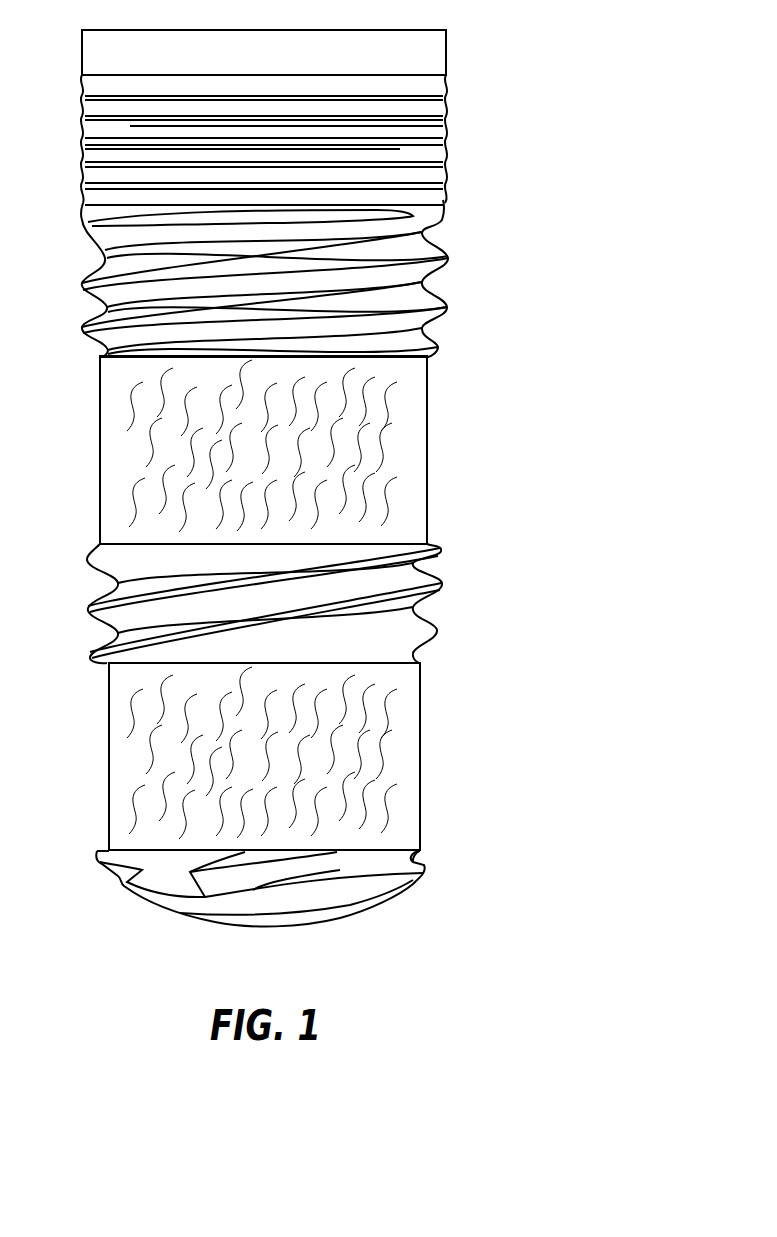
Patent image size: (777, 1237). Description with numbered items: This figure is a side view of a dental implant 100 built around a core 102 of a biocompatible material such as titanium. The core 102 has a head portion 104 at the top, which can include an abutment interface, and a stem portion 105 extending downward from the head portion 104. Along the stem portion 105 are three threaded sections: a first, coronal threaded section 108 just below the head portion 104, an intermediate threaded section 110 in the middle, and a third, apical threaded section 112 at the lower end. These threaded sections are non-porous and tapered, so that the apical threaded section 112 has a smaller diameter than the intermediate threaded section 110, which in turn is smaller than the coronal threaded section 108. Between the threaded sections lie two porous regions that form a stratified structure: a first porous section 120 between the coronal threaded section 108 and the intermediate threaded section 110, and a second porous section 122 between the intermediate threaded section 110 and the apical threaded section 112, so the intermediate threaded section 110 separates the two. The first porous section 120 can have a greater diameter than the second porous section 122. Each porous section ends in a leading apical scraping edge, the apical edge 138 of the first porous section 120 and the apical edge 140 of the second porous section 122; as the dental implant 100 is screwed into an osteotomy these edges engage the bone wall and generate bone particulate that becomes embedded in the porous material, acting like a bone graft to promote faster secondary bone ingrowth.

The dental implant 100 is at (592, 323).
The core 102 is at (446, 170).
The head portion 104 is at (416, 67).
The stem portion 105 is at (512, 485).
The coronal threaded section 108 is at (448, 296).
The intermediate threaded section 110 is at (432, 622).
The apical threaded section 112 is at (342, 918).
The first porous section 120 is at (427, 413).
The second porous section 122 is at (420, 757).
The apical edge 138 is at (441, 548).
The apical edge 140 is at (417, 852).